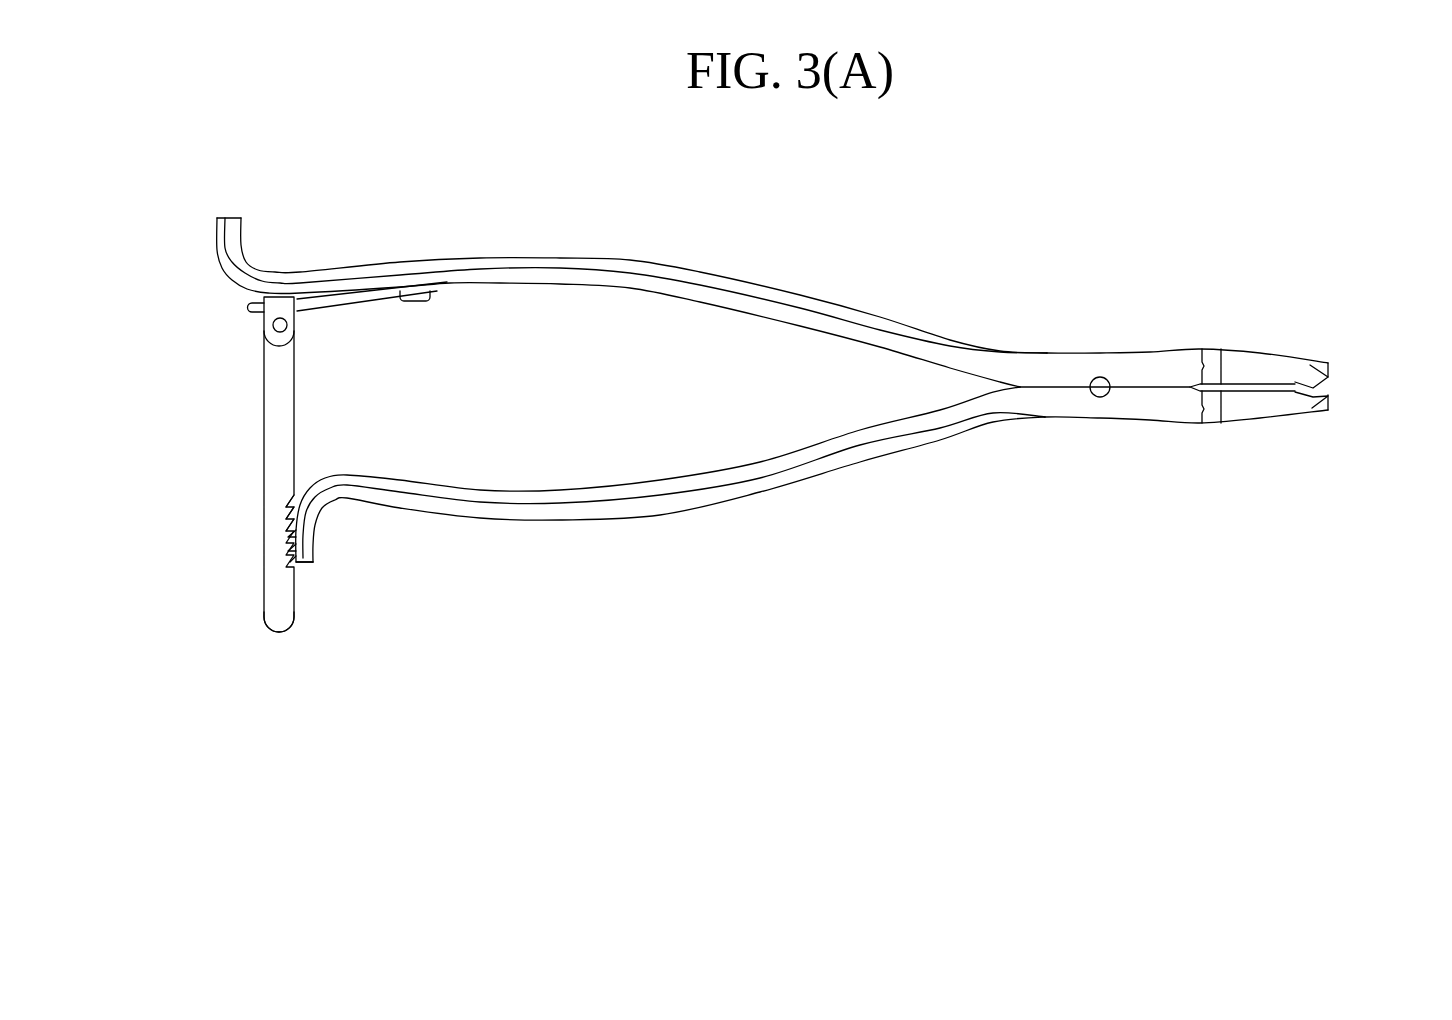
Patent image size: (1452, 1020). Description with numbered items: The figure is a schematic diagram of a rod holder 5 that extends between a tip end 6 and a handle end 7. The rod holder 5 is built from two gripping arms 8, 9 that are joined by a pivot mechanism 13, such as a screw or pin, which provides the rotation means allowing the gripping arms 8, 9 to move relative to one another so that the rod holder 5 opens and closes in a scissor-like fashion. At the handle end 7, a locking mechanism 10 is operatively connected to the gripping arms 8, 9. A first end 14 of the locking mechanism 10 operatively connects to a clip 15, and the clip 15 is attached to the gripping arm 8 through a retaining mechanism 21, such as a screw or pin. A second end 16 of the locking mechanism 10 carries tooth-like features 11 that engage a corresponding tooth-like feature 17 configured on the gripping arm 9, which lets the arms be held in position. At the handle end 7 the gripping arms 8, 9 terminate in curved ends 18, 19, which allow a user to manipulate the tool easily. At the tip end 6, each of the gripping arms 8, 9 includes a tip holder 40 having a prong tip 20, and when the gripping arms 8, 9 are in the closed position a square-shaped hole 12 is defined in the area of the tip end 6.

The rod holder 5 is at (877, 575).
The tip end 6 is at (1270, 468).
The handle end 7 is at (220, 395).
The gripping arm 8 is at (637, 268).
The gripping arm 9 is at (632, 493).
The locking mechanism 10 is at (275, 465).
The tooth-like features 11 is at (290, 547).
The square-shaped hole 12 is at (1308, 365).
The pivot mechanism 13 is at (1098, 378).
The first end 14 is at (285, 332).
The clip 15 is at (350, 298).
The second end 16 is at (278, 608).
The tooth-like feature 17 is at (290, 527).
The curved end 18 is at (222, 242).
The curved end 19 is at (308, 545).
The prong tip 20 is at (1330, 373).
The retaining mechanism 21 is at (412, 297).
The tip holder 40 is at (1250, 370).